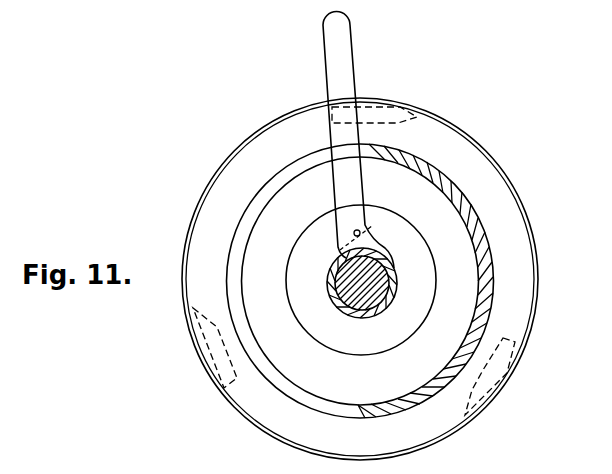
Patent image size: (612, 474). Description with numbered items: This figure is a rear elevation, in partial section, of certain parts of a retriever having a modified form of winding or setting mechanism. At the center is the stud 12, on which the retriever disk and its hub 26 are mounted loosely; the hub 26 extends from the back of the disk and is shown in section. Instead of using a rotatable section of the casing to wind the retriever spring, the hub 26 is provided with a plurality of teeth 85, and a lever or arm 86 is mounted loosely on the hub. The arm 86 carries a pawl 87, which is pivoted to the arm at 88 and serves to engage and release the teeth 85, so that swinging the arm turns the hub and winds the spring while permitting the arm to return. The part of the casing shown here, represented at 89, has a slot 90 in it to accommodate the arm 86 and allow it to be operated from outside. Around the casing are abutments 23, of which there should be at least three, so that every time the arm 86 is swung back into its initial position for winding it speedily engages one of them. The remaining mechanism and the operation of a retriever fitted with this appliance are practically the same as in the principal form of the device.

The lever or arm 86 is at (343, 56).
The abutments 23 is at (408, 98).
The casing part 89 is at (487, 235).
The slot 90 is at (234, 273).
The pivot 88 is at (360, 233).
The pawl 87 is at (346, 242).
The teeth 85 is at (333, 270).
The stud 12 is at (352, 300).
The disk hub 26 is at (380, 295).